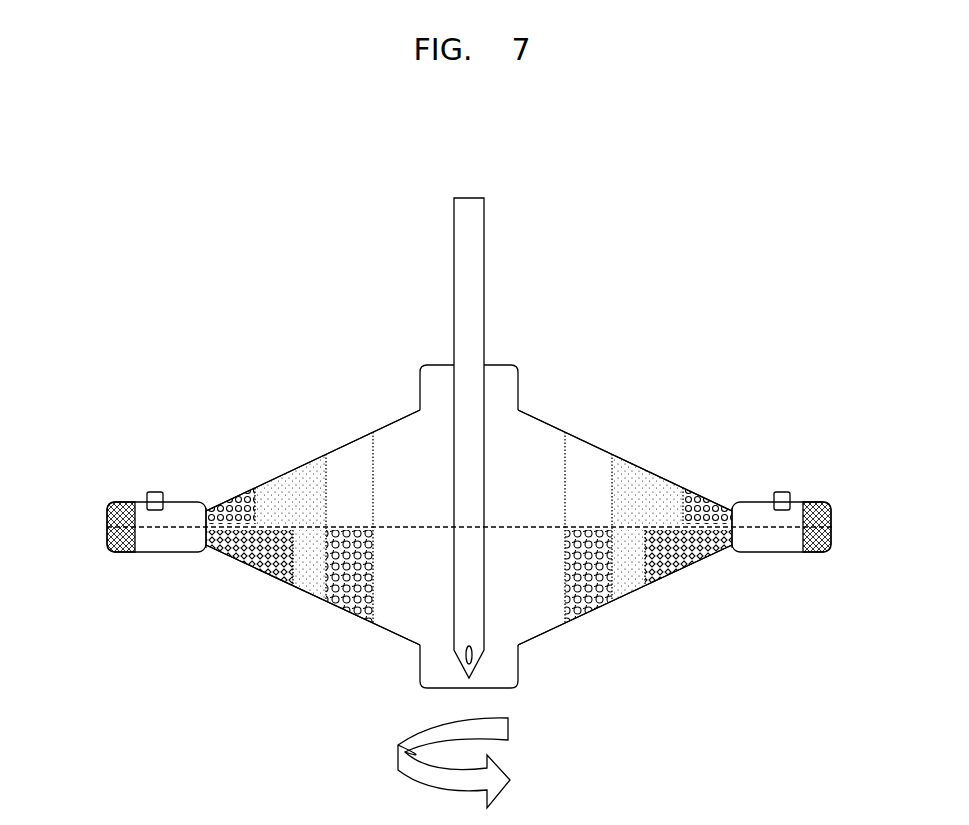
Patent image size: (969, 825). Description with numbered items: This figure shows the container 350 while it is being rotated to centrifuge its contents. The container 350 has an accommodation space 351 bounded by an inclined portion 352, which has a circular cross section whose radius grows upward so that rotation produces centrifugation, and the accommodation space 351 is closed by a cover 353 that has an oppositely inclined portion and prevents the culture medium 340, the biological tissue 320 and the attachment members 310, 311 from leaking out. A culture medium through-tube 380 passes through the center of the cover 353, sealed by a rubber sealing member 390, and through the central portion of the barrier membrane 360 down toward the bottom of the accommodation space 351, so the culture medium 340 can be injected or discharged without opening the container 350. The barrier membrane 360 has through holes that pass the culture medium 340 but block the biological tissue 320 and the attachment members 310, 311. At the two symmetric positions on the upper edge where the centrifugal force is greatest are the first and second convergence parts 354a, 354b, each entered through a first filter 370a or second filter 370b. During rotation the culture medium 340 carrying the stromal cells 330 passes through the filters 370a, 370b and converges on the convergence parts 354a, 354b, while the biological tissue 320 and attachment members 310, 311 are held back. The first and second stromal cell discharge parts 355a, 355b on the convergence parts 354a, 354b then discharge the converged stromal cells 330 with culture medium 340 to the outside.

The culture medium through-tube 380 is at (483, 288).
The rubber sealing member 390 is at (434, 390).
The barrier membrane 360 is at (533, 527).
The container 350 is at (294, 598).
The accommodation space 351 is at (397, 601).
The inclined portion 352 is at (376, 650).
The cover 353 is at (344, 447).
The stromal cells 330 is at (107, 527).
The first convergence part 354a is at (155, 553).
The second convergence part 354b is at (783, 553).
The first stromal cell discharge part 355a is at (155, 492).
The second stromal cell discharge part 355b is at (783, 492).
The first filter 370a is at (206, 512).
The second filter 370b is at (732, 512).
The attachment member 310 is at (222, 552).
The attachment member 311 is at (268, 578).
The biological tissue 320 is at (330, 612).
The culture medium 340 is at (290, 487).